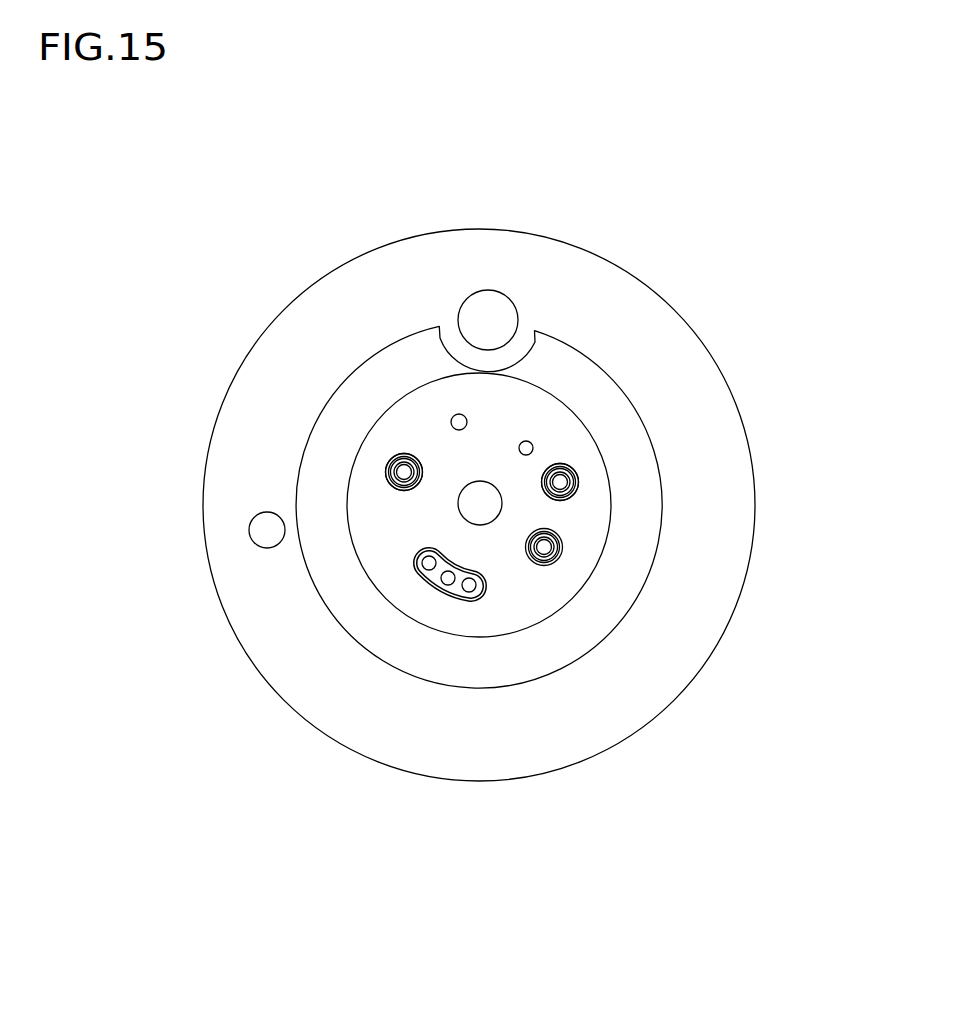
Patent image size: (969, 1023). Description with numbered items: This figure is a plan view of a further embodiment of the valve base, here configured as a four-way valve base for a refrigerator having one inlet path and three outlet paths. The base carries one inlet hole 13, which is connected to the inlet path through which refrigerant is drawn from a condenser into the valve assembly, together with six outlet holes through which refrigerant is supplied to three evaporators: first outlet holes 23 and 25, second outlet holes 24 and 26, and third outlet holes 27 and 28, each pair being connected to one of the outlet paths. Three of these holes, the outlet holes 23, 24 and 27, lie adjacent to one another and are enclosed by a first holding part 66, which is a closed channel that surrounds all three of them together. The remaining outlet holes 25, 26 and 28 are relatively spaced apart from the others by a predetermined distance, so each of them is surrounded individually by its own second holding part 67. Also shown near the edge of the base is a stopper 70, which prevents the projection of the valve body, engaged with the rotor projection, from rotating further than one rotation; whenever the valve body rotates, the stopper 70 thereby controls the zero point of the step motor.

The inlet hole 13 is at (542, 260).
The first outlet hole 23 is at (367, 693).
The second outlet hole 24 is at (421, 711).
The first outlet hole 25 is at (658, 616).
The second outlet hole 26 is at (693, 502).
The third outlet hole 27 is at (492, 716).
The third outlet hole 28 is at (280, 548).
The first holding part 66 is at (330, 644).
The second holding part 67 is at (561, 371).
The stopper 70 is at (199, 515).